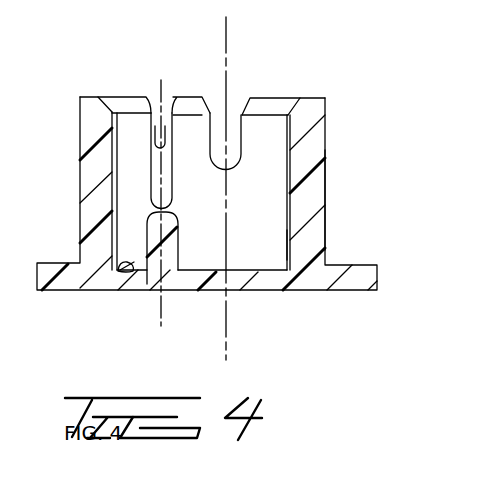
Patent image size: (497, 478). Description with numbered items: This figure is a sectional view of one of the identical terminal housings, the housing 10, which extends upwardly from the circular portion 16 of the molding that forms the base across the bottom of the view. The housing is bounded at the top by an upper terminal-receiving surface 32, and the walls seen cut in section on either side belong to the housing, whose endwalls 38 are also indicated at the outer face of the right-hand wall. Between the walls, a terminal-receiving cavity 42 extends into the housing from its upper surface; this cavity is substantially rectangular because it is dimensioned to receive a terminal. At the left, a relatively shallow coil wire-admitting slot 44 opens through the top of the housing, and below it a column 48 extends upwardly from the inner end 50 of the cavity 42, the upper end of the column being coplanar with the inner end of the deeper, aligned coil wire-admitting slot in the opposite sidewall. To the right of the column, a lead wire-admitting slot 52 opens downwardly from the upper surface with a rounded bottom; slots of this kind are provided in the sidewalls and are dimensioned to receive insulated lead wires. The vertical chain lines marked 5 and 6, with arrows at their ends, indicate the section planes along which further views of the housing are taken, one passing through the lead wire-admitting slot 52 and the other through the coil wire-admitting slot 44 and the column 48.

The section line 5- 5 is at (188, 360).
The section line 6- 6 is at (192, 326).
The housing 10 is at (344, 142).
The circular portion 16 is at (363, 264).
The upper terminal-receiving surface 32 is at (300, 106).
The endwalls 38 is at (324, 201).
The terminal-receiving cavity 42 is at (266, 214).
The coil wire-admitting slot 44 is at (159, 131).
The column 48 is at (172, 247).
The inner end of the cavity 50 is at (126, 276).
The lead wire-admitting slots 52 is at (235, 137).